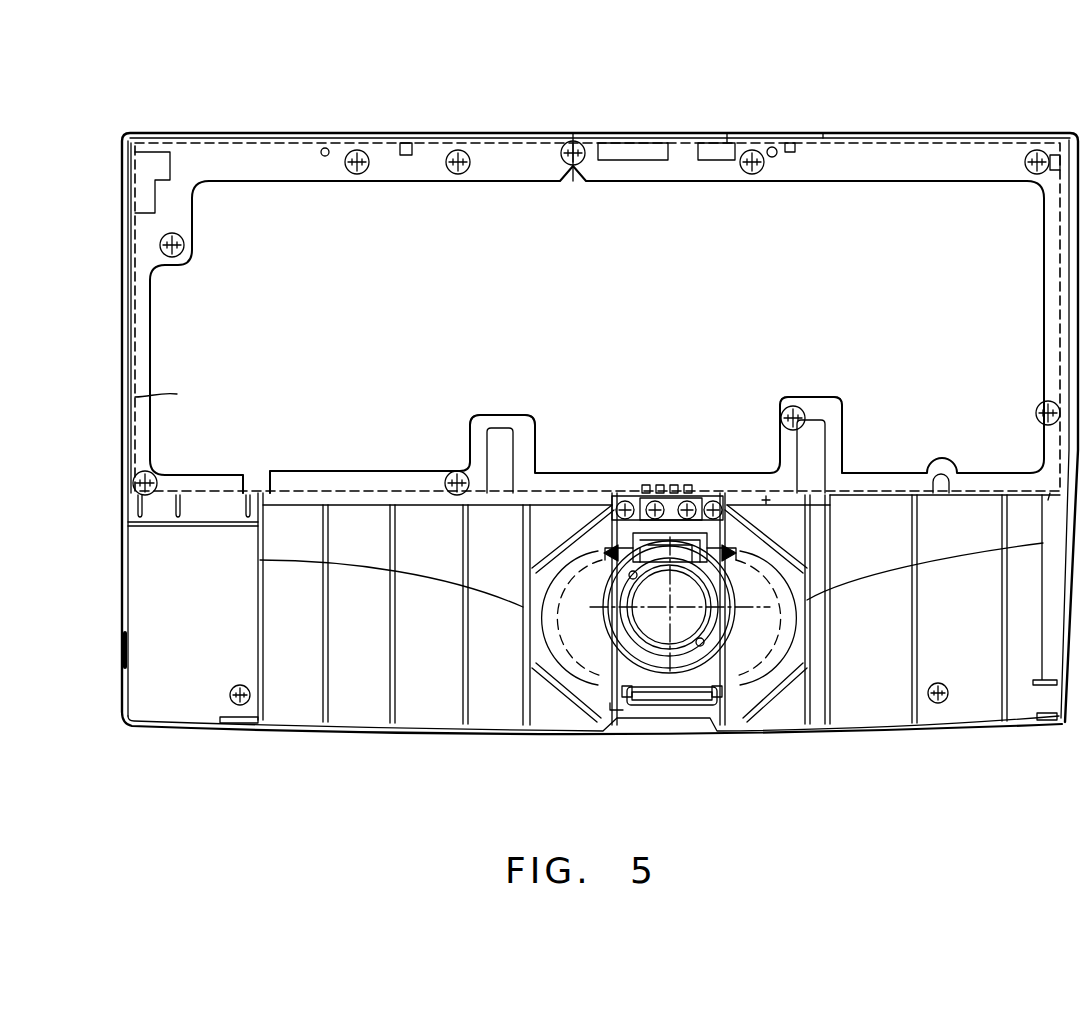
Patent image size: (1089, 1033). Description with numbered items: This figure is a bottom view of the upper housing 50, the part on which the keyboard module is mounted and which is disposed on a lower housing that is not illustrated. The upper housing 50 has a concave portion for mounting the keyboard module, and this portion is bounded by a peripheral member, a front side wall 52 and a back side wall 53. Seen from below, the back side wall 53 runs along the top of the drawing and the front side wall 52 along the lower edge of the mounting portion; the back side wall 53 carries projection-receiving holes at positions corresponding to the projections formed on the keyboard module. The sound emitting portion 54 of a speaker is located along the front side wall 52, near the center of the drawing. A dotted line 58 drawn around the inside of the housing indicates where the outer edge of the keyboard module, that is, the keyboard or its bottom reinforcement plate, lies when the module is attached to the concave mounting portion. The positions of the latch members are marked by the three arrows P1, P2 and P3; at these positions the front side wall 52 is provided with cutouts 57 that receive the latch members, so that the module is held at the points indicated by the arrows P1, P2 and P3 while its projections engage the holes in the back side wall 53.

The upper housing 50 is at (548, 112).
The front side wall 52 is at (367, 490).
The back side wall 53 is at (527, 145).
The sound emitting portion 54 is at (673, 490).
The cutouts 57 is at (258, 490).
The dotted line 58 is at (198, 490).
The arrow P1 is at (812, 455).
The arrow P2 is at (500, 453).
The arrow P3 is at (255, 450).